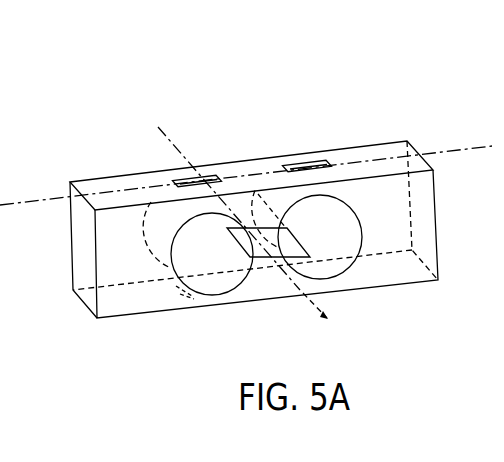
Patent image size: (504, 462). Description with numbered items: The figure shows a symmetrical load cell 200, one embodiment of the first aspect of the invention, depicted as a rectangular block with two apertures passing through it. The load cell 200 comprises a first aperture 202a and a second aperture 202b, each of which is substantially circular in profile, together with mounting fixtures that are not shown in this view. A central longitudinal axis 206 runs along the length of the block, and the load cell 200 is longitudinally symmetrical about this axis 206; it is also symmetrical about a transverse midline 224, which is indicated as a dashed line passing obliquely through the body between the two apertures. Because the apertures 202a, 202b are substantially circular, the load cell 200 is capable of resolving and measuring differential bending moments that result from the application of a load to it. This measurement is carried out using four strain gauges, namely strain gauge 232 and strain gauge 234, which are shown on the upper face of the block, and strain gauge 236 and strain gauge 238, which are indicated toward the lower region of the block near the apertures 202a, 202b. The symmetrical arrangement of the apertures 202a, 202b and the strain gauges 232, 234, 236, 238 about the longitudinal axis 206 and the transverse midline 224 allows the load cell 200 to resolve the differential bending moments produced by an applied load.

The load cell 200 is at (113, 93).
The central longitudinal axis 206 is at (434, 145).
The strain gauge 232 is at (173, 180).
The strain gauge 234 is at (318, 164).
The aperture 202a is at (212, 250).
The aperture 202b is at (329, 234).
The strain gauge 238 is at (300, 291).
The transverse midline 224 is at (313, 321).
The strain gauge 236 is at (184, 299).